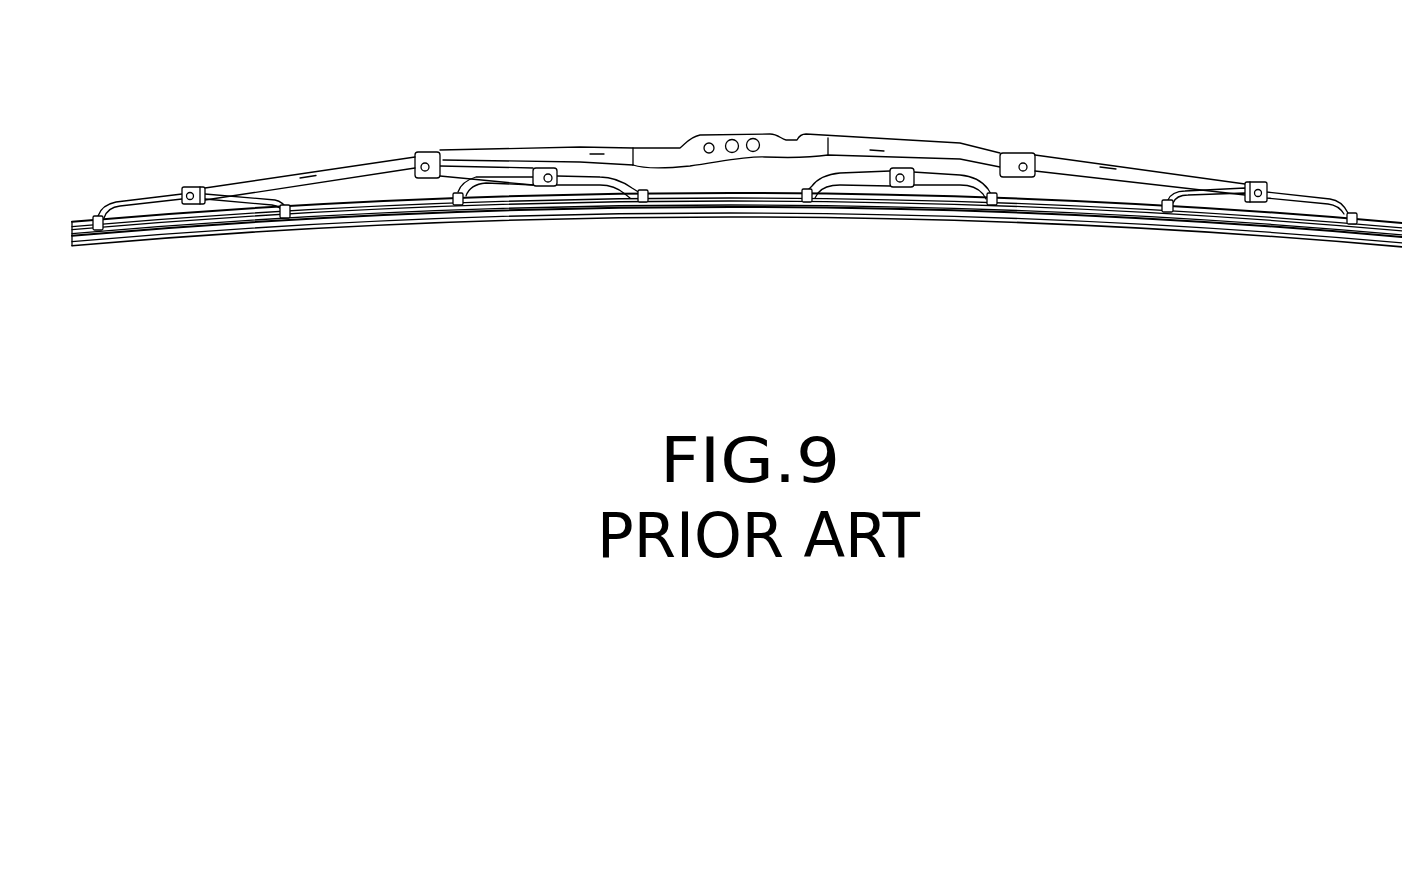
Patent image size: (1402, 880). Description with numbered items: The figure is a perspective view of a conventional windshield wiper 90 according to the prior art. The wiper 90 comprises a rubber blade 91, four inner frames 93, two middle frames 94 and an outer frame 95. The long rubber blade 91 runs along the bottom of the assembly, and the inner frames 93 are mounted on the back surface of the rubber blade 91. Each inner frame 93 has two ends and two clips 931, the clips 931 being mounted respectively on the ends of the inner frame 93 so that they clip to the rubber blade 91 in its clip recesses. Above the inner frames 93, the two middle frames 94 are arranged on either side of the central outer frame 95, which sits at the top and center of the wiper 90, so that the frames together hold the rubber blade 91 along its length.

The conventional windshield wiper 90 is at (712, 105).
The rubber blade 91 is at (257, 233).
The inner frame 93 is at (150, 196).
The clip 931 is at (100, 230).
The middle frame 94 is at (315, 167).
The outer frame 95 is at (613, 148).